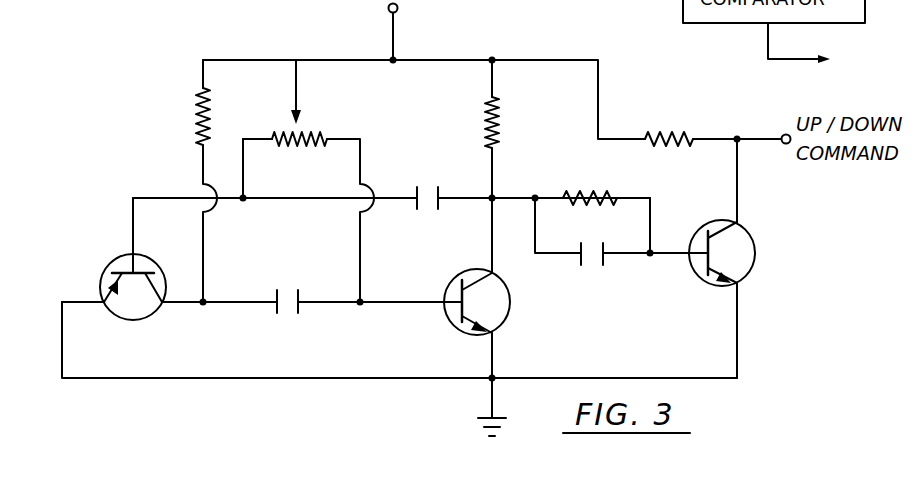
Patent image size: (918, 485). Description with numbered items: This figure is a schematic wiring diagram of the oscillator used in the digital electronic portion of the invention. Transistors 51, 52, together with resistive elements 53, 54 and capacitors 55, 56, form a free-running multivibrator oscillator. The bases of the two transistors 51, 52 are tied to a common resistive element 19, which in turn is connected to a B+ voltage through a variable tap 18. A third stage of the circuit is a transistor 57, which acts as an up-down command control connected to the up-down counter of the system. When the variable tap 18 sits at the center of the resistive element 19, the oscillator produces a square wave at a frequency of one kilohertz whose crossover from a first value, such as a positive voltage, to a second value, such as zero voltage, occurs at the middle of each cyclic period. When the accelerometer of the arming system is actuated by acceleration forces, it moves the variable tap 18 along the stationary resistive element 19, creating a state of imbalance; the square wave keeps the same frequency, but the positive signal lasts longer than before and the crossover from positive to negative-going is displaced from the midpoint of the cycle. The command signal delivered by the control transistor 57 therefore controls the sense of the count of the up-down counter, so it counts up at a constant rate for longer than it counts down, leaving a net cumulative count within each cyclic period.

The variable tap 18 is at (297, 94).
The common resistive element 19 is at (307, 219).
The transistor 51 is at (121, 320).
The transistor 52 is at (511, 302).
The resistive element 53 is at (209, 120).
The resistive element 54 is at (497, 122).
The capacitor 55 is at (276, 314).
The capacitor 56 is at (438, 186).
The transistor 57 is at (752, 243).